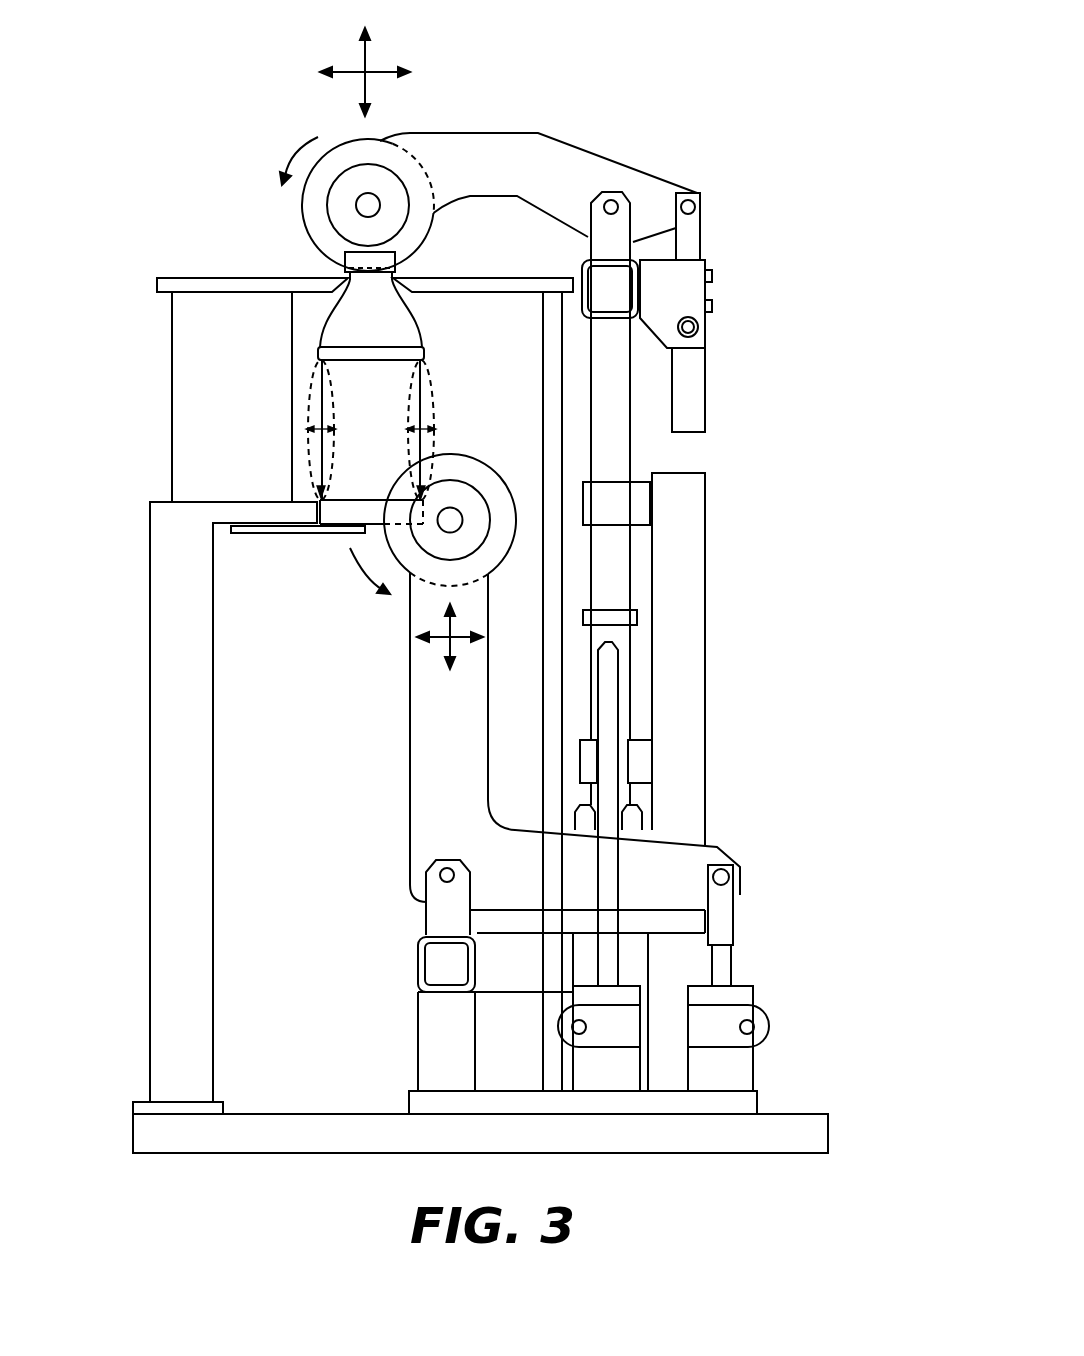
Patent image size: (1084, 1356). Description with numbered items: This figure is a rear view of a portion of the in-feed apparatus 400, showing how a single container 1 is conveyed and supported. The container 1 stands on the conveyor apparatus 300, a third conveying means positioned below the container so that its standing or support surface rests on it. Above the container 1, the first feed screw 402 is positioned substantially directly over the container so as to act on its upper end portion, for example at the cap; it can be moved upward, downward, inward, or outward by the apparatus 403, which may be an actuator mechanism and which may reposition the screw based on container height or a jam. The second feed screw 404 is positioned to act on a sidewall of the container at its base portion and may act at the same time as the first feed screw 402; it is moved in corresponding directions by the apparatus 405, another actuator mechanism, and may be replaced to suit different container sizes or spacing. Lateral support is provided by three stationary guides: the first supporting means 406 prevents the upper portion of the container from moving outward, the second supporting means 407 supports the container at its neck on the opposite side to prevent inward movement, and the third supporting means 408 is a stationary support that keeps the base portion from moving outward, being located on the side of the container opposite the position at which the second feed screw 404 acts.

The in-feed apparatus 400 is at (663, 78).
The first feed screw 402 is at (334, 148).
The apparatus 403 is at (712, 290).
The second feed screw 404 is at (482, 455).
The apparatus 405 is at (418, 962).
The first supporting means 406 is at (177, 279).
The second supporting means 407 is at (558, 279).
The third supporting means 408 is at (308, 501).
The conveyor apparatus 300 is at (270, 537).
The container 1 is at (425, 372).